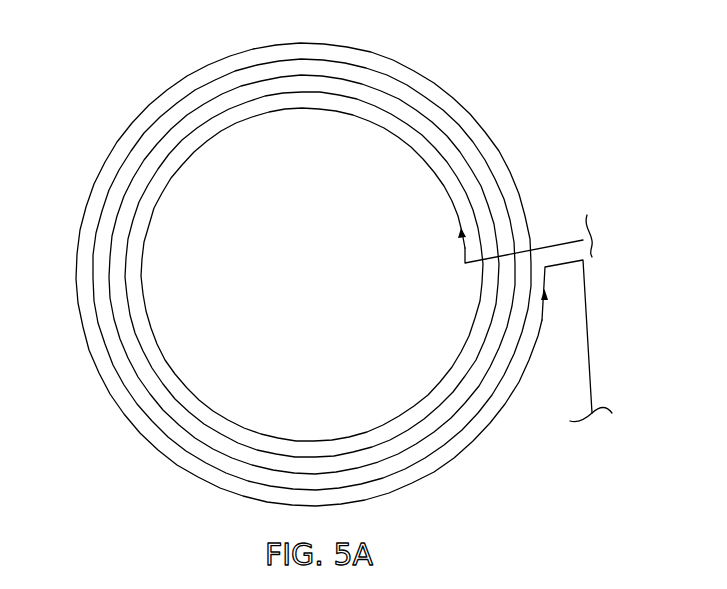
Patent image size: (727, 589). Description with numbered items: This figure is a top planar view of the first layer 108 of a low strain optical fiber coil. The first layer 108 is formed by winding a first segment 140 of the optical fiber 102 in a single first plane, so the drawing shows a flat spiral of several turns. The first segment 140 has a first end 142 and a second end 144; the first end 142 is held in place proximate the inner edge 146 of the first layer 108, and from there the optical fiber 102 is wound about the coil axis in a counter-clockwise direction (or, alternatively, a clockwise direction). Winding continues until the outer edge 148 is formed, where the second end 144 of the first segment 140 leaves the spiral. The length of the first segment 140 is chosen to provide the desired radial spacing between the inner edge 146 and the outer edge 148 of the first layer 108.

The first layer 108 is at (307, 263).
The first segment 140 is at (499, 115).
The optical fiber 102 is at (300, 108).
The first end 142 is at (465, 253).
The second end 144 is at (540, 332).
The inner edge 146 is at (391, 421).
The outer edge 148 is at (455, 457).